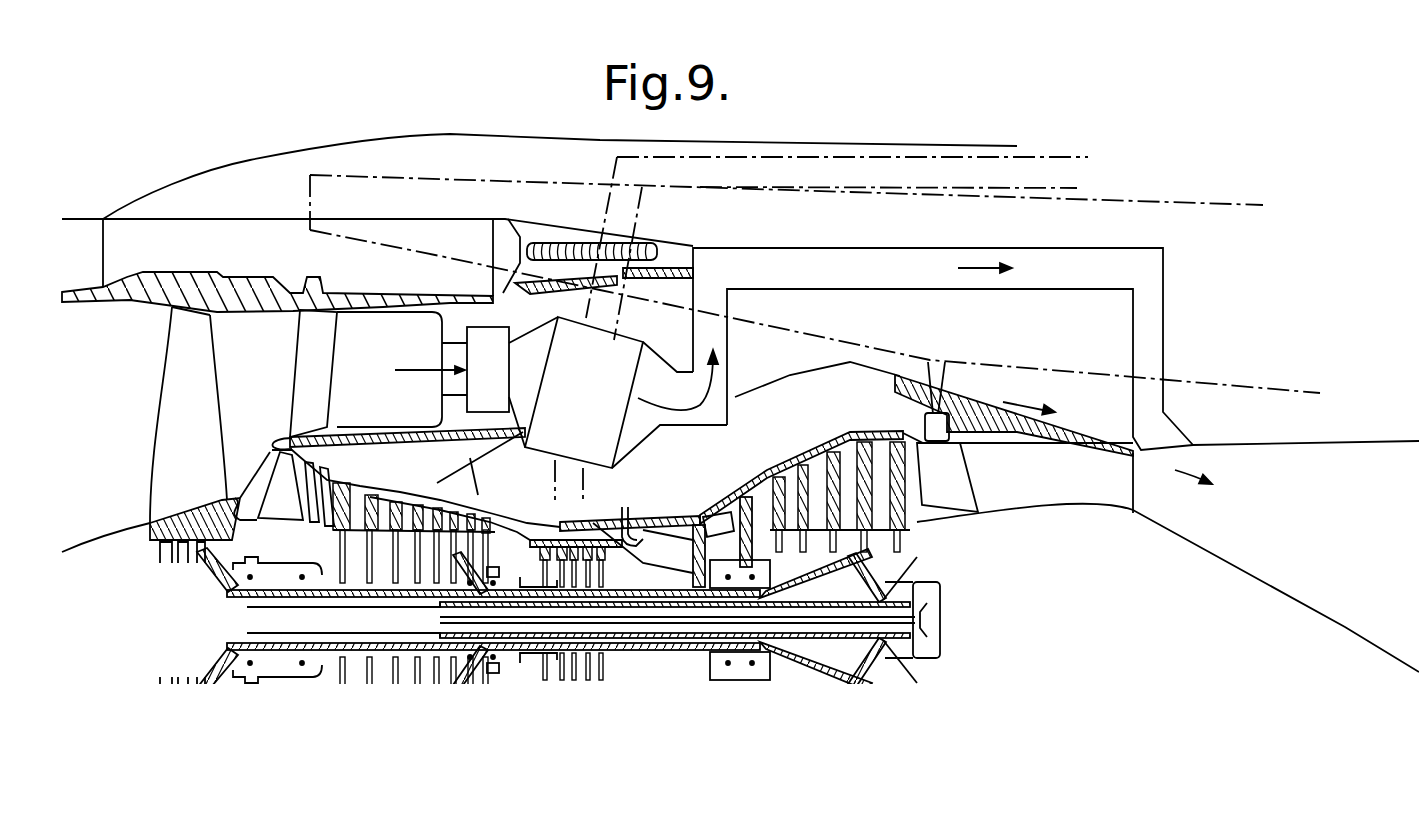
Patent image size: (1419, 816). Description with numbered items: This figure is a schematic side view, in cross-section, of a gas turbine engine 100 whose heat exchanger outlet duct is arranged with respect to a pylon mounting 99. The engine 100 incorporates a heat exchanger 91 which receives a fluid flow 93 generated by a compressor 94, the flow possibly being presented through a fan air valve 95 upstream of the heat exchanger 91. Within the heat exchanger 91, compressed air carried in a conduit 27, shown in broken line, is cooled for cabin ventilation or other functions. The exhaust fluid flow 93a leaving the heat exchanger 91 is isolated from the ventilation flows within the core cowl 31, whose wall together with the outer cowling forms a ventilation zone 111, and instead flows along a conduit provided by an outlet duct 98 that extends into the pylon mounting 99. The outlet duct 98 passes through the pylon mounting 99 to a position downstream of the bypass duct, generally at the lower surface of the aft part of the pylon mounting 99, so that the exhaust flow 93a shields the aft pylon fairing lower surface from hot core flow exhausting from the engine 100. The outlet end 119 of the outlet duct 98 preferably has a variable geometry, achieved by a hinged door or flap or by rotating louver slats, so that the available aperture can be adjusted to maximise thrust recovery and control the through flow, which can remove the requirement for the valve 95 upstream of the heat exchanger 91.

The conduit 27 is at (802, 170).
The pylon mounting 99 is at (1166, 200).
The exhaust fluid flow 93a is at (978, 266).
The outlet duct 98 is at (1152, 310).
The outlet end 119 is at (1195, 445).
The compressor 94 is at (193, 368).
The fluid flow 93 is at (400, 368).
The fan air valve 95 is at (474, 387).
The heat exchanger 91 is at (569, 413).
The core cowl 31 is at (785, 388).
The ventilation zone 111 is at (813, 422).
The gas turbine engine 100 is at (997, 652).